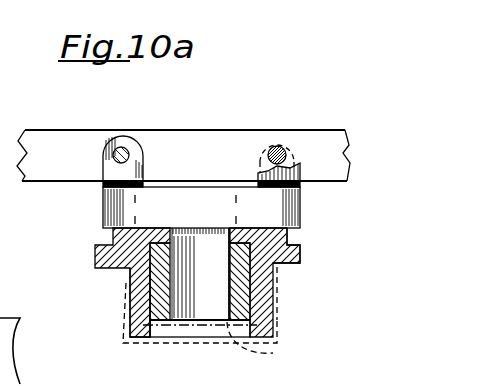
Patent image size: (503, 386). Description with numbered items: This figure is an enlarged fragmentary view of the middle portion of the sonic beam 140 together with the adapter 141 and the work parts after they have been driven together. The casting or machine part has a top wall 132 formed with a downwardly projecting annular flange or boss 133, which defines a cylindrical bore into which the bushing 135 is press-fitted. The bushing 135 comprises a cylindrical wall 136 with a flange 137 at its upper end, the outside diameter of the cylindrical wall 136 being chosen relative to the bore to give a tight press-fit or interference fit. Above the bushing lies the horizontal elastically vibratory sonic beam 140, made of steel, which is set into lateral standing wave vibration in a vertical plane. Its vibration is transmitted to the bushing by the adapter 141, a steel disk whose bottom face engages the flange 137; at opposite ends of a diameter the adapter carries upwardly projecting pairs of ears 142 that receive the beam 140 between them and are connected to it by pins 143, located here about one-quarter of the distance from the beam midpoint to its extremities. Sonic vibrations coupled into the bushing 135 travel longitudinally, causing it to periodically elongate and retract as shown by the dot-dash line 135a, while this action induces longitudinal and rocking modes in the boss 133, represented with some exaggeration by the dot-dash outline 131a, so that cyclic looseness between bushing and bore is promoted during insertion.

The sonic beam 140 is at (223, 130).
The ears 142 is at (118, 133).
The pins 143 is at (276, 141).
The adapter 141 is at (110, 205).
The top wall 132 is at (97, 260).
The flange 137 is at (287, 233).
The annular flange or boss 133 is at (140, 287).
The cylindrical wall 136 is at (243, 293).
The bushing 135 is at (277, 318).
The dot-dash outline of boss vibration 131a is at (120, 332).
The dot-dash line of bushing elongation 135a is at (273, 353).